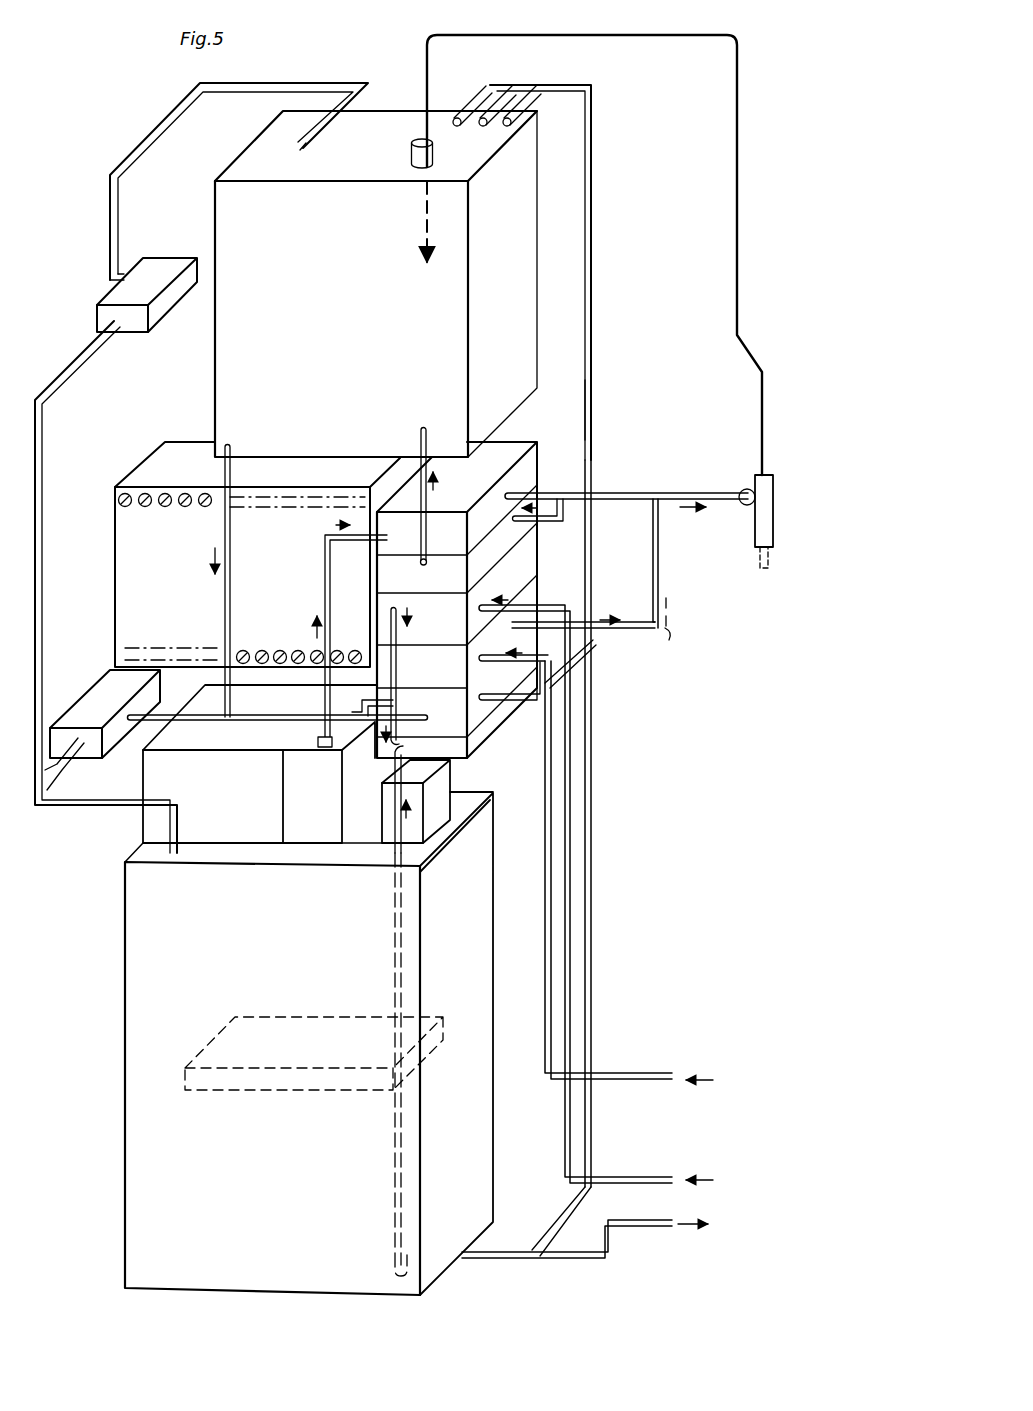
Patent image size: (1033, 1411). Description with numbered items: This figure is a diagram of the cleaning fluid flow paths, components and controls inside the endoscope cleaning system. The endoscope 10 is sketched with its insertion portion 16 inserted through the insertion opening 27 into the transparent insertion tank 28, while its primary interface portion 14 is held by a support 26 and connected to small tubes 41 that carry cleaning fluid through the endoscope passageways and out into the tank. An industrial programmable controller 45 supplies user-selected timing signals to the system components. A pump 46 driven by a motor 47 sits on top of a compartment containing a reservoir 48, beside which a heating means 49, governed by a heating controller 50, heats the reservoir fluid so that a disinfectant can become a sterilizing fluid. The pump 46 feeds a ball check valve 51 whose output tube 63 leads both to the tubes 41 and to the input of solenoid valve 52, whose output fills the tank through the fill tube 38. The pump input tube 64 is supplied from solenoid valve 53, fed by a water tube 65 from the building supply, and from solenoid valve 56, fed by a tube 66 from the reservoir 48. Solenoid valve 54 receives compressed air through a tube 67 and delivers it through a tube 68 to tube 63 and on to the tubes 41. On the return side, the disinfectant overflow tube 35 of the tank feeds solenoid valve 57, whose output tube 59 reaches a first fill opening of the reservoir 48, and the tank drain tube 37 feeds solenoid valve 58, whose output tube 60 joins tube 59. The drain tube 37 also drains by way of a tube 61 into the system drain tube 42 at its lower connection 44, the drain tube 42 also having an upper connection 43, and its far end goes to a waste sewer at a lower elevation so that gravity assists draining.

The endoscope 10 is at (737, 324).
The primary interface portion 14 is at (776, 535).
The insertion portion 16 is at (426, 128).
The support 26 is at (548, 86).
The endoscope cleaning insertion opening 27 is at (411, 153).
The insertion tank 28 is at (215, 340).
The disinfectant fluid overflow tube 35 is at (317, 83).
The drain tube 37 is at (232, 475).
The fill tube 38 is at (427, 440).
The small tubes 41 is at (745, 490).
The system drain tube 42 is at (594, 540).
The upper connection 43 is at (583, 412).
The lower connection 44 is at (580, 660).
The industrial programmable controller 45 is at (155, 452).
The pump 46 is at (318, 834).
The motor 47 is at (237, 834).
The reservoir 48 is at (288, 957).
The heating means 49 is at (324, 1010).
The heating controller 50 is at (453, 779).
The ball check valve 51 is at (542, 460).
The electrically controlled solenoid valve 52 is at (543, 527).
The electrically controlled solenoid valve 53 is at (545, 556).
The electrically controlled solenoid valve 54 is at (548, 592).
The electrically controlled solenoid valve 56 is at (502, 725).
The electrically controlled solenoid valve 57 is at (97, 304).
The electrically controlled solenoid valve 58 is at (90, 700).
The tube 59 is at (42, 548).
The tube 60 is at (62, 771).
The tube 61 is at (582, 638).
The tube 63 is at (565, 505).
The tube 64 is at (398, 680).
The tube 65 is at (590, 607).
The tube 66 is at (375, 855).
The tube 67 is at (544, 763).
The tube 68 is at (660, 562).